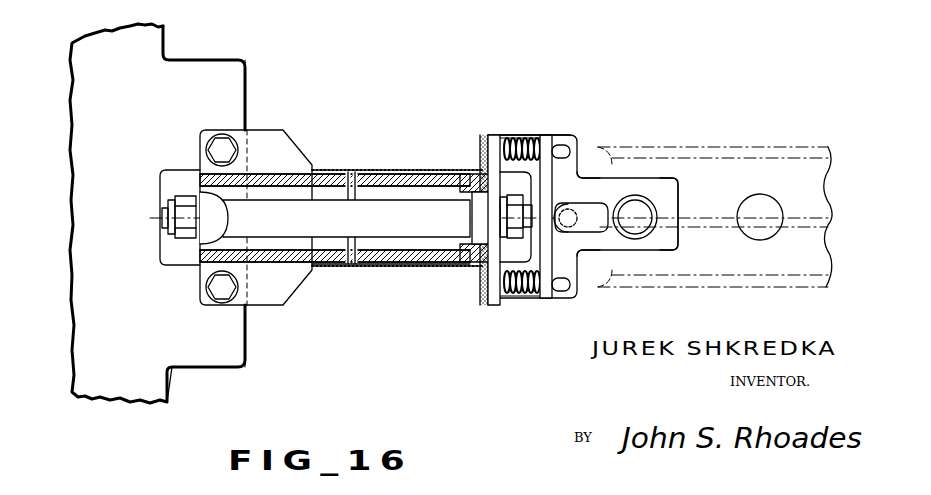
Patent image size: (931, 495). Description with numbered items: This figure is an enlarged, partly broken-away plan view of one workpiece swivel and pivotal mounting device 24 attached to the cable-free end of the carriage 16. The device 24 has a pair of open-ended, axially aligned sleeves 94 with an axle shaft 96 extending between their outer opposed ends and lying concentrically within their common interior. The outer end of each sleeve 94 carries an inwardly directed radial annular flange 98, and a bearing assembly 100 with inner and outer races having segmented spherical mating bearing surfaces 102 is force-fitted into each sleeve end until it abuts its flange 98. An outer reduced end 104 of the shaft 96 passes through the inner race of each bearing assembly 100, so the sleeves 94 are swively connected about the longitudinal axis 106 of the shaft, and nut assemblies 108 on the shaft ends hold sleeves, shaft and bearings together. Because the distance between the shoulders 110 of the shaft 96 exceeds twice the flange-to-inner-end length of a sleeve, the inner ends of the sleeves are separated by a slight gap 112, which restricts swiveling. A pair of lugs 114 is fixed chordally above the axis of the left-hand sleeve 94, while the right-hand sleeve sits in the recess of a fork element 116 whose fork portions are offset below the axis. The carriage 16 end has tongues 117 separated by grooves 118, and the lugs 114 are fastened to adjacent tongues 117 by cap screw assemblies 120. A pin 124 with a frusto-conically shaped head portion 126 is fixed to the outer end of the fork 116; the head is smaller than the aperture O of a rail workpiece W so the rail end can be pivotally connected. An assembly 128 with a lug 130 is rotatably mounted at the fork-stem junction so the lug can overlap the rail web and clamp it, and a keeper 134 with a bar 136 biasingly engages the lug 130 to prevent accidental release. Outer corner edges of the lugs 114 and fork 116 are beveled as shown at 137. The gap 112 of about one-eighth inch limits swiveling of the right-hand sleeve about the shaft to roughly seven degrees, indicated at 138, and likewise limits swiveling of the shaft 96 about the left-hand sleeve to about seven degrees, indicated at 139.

The carriage 16 is at (90, 57).
The workpiece swivel and pivotal mounting device 24 is at (338, 86).
The sleeve 94 is at (352, 173).
The axle shaft 96 is at (280, 228).
The radial annular flange 98 is at (258, 268).
The bearing assembly 100 is at (480, 265).
The mating bearing surfaces 102 is at (480, 243).
The outer reduced end 104 is at (166, 205).
The longitudinal axis 106 is at (165, 218).
The nut assembly 108 is at (185, 222).
The shoulder 110 is at (262, 138).
The gap 112 is at (372, 268).
The lug 114 is at (260, 128).
The fork element 116 is at (428, 130).
The tongue 117 is at (231, 71).
The groove 118 is at (196, 58).
The cap screw assembly 120 is at (218, 146).
The pin 124 is at (681, 238).
The frusto-conically shaped head portion 126 is at (637, 206).
The assembly 128 is at (592, 207).
The lug 130 is at (605, 252).
The keeper 134 is at (494, 132).
The bar 136 is at (551, 130).
The beveled corner edge 137 is at (292, 298).
The swivel angle 138 is at (838, 236).
The swivel angle 139 is at (411, 200).
The aperture O is at (662, 197).
The rail workpiece W is at (767, 287).